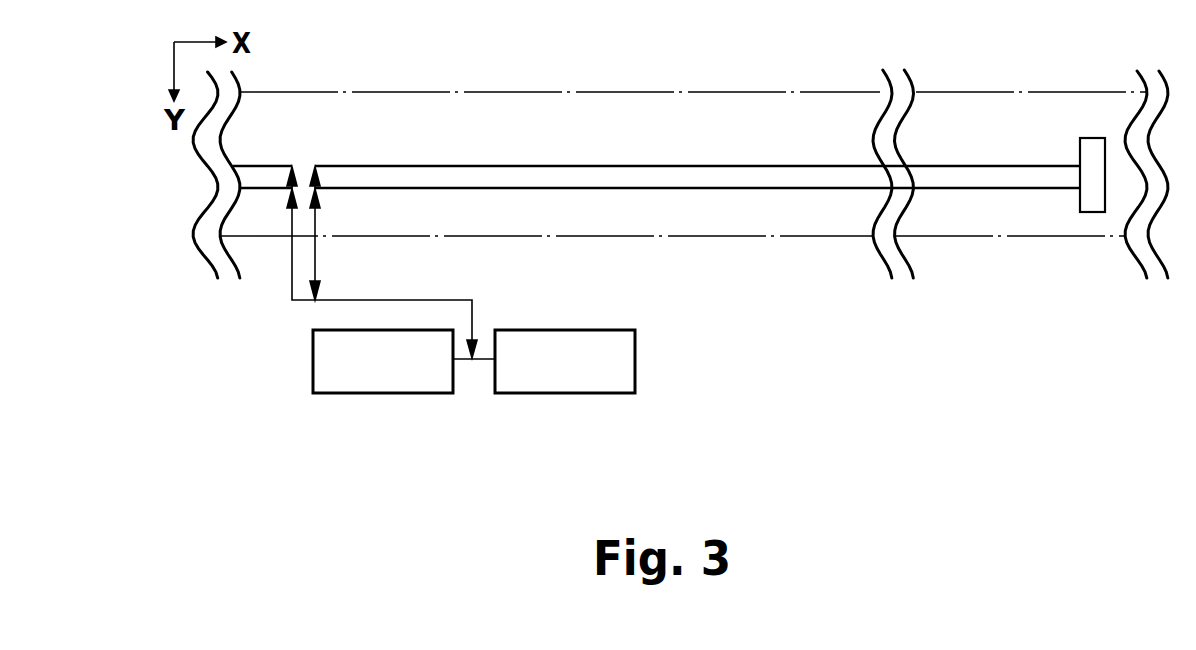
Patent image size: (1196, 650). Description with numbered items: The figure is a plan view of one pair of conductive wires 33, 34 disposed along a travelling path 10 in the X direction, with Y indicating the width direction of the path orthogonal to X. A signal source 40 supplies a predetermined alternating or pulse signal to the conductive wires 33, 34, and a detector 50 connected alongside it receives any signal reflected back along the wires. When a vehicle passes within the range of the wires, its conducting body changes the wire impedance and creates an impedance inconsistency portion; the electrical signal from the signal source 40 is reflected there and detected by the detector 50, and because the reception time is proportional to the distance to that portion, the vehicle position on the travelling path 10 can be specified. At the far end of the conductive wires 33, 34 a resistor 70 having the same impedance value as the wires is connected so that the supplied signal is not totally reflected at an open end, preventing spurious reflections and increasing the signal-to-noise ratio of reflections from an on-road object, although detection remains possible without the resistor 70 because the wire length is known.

The travelling path 10 is at (487, 92).
The conductive wire 33 is at (585, 166).
The conductive wire 34 is at (687, 188).
The signal source 40 is at (382, 394).
The detector 50 is at (540, 394).
The resistor 70 is at (1090, 213).